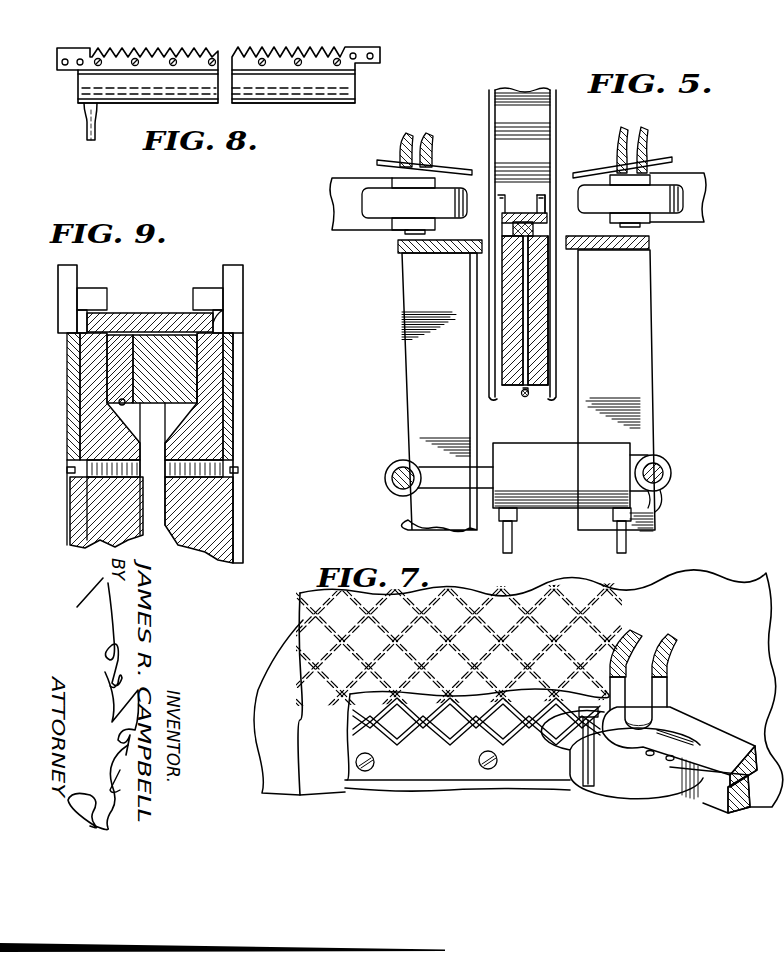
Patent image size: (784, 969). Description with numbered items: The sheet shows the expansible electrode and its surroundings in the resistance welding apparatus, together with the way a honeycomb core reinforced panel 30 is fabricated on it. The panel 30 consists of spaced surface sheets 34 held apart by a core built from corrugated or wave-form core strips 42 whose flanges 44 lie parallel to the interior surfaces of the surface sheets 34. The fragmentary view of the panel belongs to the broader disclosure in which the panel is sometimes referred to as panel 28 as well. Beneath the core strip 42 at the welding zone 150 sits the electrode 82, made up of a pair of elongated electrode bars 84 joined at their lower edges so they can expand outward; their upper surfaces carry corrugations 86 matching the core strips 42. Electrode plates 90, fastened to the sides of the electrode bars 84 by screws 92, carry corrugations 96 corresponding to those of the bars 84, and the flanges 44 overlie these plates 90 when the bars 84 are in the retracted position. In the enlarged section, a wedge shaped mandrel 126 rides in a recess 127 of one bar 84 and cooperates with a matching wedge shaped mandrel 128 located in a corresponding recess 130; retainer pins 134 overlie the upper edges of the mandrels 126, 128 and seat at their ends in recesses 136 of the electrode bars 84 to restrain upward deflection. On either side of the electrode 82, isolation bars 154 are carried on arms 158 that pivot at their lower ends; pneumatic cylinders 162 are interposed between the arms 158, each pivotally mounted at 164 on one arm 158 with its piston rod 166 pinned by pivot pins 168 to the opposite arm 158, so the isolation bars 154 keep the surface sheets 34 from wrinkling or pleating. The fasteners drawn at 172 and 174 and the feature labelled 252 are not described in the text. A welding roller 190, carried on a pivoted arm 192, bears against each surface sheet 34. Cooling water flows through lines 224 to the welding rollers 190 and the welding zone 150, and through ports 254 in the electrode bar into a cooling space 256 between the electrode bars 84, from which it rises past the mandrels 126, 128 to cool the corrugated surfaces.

In FIG. 7, the fence panel 28 is at (776, 560).
In FIG. 5, the honeycomb core reinforced panel 30 is at (560, 96).
In FIG. 7, the honeycomb core reinforced panel 30 is at (708, 586).
In FIG. 5, the surface sheets 34 is at (491, 365).
In FIG. 7, the surface sheets 34 is at (320, 617).
In FIG. 5, the core strips 42 is at (533, 137).
In FIG. 7, the core strips 42 is at (377, 737).
In FIG. 7, the flanges 44 is at (373, 727).
In FIG. 8, the electrode 82 is at (75, 86).
In FIG. 9, the electrode 82 is at (250, 537).
In FIG. 5, the electrode 82 is at (562, 335).
In FIG. 7, the electrode 82 is at (368, 789).
In FIG. 9, the electrode bars 84 is at (118, 520).
In FIG. 5, the electrode bars 84 is at (510, 392).
In FIG. 9, the corrugations 86 is at (95, 297).
In FIG. 8, the electrode plates 90 is at (346, 50).
In FIG. 9, the electrode plates 90 is at (232, 395).
In FIG. 5, the electrode plates 90 is at (543, 213).
In FIG. 7, the electrode plates 90 is at (445, 769).
In FIG. 8, the screws 92 is at (301, 64).
In FIG. 9, the screws 92 is at (238, 470).
In FIG. 7, the screws 92 is at (491, 769).
In FIG. 8, the corrugations 96 is at (252, 47).
In FIG. 9, the corrugations 96 is at (72, 270).
In FIG. 9, the wedge shaped mandrel 126 is at (118, 347).
In FIG. 5, the wedge shaped mandrel 126 is at (513, 226).
In FIG. 9, the recess 127 is at (118, 407).
In FIG. 5, the recess 127 is at (498, 258).
In FIG. 9, the wedge shaped mandrel 128 is at (180, 357).
In FIG. 5, the wedge shaped mandrel 128 is at (540, 223).
In FIG. 9, the recess 130 is at (193, 413).
In FIG. 5, the recess 130 is at (548, 253).
In FIG. 9, the retainer pins 134 is at (150, 322).
In FIG. 5, the retainer pins 134 is at (518, 213).
In FIG. 9, the recesses 136 is at (216, 323).
In FIG. 5, the welding zone 150 is at (485, 196).
In FIG. 5, the isolation bars 154 is at (640, 243).
In FIG. 5, the arms 158 is at (627, 375).
In FIG. 5, the pneumatic cylinders 162 is at (610, 450).
In FIG. 5, the pivotal mounting 164 is at (657, 478).
In FIG. 5, the piston rods 166 is at (440, 483).
In FIG. 5, the pivot pins 168 is at (395, 483).
In FIG. 5, the bolt 172 is at (627, 541).
In FIG. 5, the bolt 174 is at (512, 531).
In FIG. 5, the welding roller 190 is at (400, 203).
In FIG. 7, the welding roller 190 is at (655, 801).
In FIG. 5, the pivoted arm 192 is at (352, 180).
In FIG. 7, the pivoted arm 192 is at (713, 740).
In FIG. 8, the cooling lines 224 is at (87, 133).
In FIG. 5, the cooling lines 224 is at (393, 162).
In FIG. 7, the cooling lines 224 is at (583, 750).
In FIG. 9, the shoulder 252 is at (200, 373).
In FIG. 8, the ports 254 is at (197, 90).
In FIG. 5, the ports 254 is at (540, 367).
In FIG. 9, the cooling space 256 is at (162, 455).
In FIG. 5, the cooling space 256 is at (523, 290).